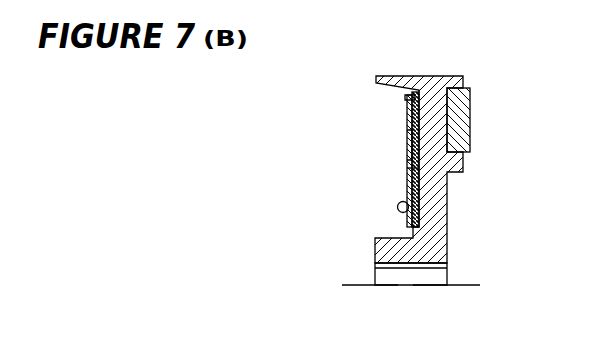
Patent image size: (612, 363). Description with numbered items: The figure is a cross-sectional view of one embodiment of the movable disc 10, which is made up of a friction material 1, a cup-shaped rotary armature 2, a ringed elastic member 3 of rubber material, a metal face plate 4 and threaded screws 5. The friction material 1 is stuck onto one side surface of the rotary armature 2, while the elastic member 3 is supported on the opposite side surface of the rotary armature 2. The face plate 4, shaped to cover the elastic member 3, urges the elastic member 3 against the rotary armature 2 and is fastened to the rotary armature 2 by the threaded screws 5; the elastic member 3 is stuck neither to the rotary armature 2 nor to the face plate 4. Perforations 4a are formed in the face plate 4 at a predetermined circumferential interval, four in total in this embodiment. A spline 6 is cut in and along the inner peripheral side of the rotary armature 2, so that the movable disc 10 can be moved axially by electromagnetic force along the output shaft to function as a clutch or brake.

The friction material 1 is at (460, 113).
The rotary armature 2 is at (432, 100).
The elastic member 3 is at (414, 92).
The face plate 4 is at (407, 105).
The perforations 4a is at (407, 147).
The threaded screws 5 is at (398, 207).
The spline 6 is at (395, 270).
The movable disc 10 is at (515, 237).